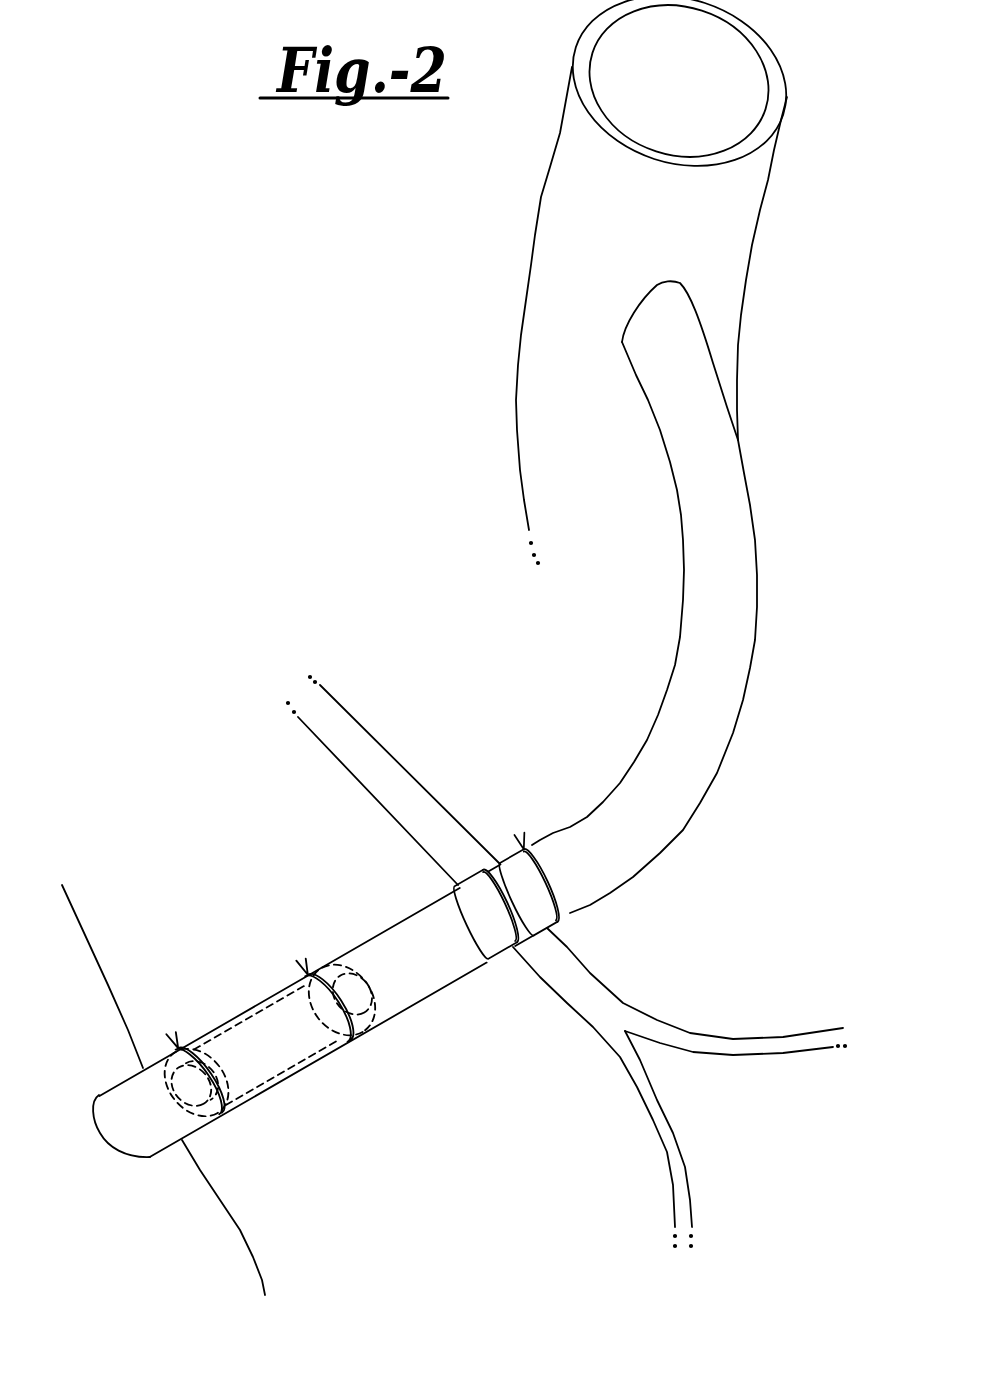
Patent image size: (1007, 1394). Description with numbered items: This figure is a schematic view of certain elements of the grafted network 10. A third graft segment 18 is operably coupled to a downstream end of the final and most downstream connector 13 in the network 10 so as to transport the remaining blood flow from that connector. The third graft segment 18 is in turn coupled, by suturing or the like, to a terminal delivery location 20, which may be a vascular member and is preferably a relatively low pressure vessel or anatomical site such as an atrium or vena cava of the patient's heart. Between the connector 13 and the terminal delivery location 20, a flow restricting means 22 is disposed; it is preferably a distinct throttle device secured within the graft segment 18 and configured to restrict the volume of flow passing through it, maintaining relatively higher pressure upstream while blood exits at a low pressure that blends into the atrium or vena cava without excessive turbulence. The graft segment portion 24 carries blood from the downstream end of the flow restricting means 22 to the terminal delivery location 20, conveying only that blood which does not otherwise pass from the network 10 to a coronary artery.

The grafted network 10 is at (368, 666).
The connector 13 is at (485, 856).
The third graft segment 18 is at (355, 948).
The terminal delivery location 20 is at (147, 1157).
The flow restricting means 22 is at (266, 986).
The graft segment portion 24 is at (157, 1063).